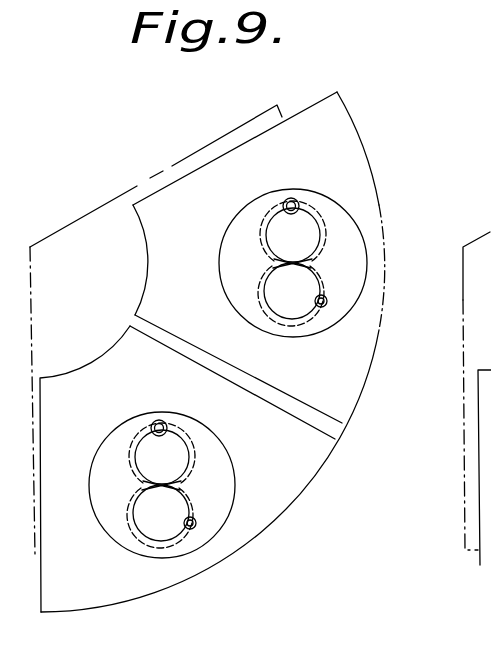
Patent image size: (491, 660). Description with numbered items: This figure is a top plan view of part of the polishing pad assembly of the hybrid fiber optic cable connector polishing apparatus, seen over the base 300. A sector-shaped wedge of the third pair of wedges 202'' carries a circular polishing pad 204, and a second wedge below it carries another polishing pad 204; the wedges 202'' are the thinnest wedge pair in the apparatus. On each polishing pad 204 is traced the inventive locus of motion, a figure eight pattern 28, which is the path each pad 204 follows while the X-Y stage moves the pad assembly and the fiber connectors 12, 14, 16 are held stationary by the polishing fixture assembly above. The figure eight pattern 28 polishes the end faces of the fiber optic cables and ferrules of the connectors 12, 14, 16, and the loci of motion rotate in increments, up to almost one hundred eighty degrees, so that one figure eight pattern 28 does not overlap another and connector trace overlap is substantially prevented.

The base 300 is at (108, 213).
The third pair of wedges 202'' is at (236, 352).
The polishing pad 204 is at (350, 290).
The figure eight pattern 28 is at (322, 222).
The first fiber optic cable connector type 12 is at (321, 298).
The second fiber optic cable connector type 14 is at (321, 298).
The third fiber optic cable connector type 16 is at (298, 203).